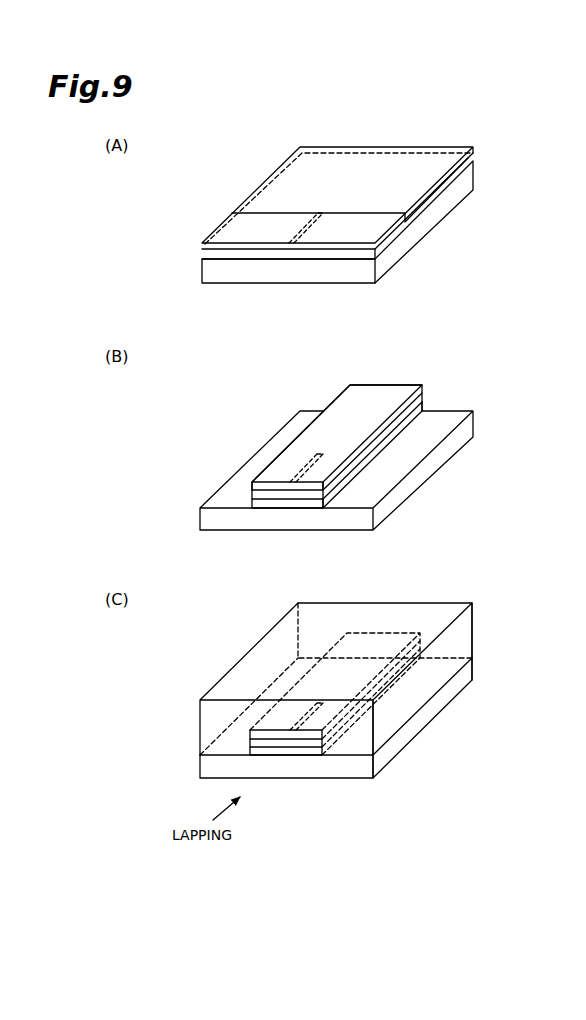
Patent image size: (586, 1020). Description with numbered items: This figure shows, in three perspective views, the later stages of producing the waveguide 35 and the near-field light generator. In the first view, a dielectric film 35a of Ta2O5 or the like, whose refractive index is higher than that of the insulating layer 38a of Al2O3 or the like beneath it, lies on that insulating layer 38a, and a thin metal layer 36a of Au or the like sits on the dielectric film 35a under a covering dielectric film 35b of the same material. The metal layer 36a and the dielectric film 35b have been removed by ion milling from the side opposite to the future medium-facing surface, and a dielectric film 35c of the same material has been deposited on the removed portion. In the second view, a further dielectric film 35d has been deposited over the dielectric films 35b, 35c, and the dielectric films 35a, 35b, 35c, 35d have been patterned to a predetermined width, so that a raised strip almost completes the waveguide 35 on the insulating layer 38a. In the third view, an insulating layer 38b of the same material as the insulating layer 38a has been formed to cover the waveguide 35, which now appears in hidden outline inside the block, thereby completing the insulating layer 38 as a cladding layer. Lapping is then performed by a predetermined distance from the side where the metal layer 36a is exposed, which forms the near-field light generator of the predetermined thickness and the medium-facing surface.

The waveguide 35 is at (277, 388).
The dielectric film 35a is at (476, 160).
The dielectric film 35b is at (393, 227).
The dielectric film 35c is at (474, 149).
The dielectric film 35d is at (421, 390).
The metal layer 36a is at (288, 245).
The insulating layer 38 is at (536, 645).
The insulating layer 38a is at (472, 180).
The insulating layer 38b is at (472, 645).